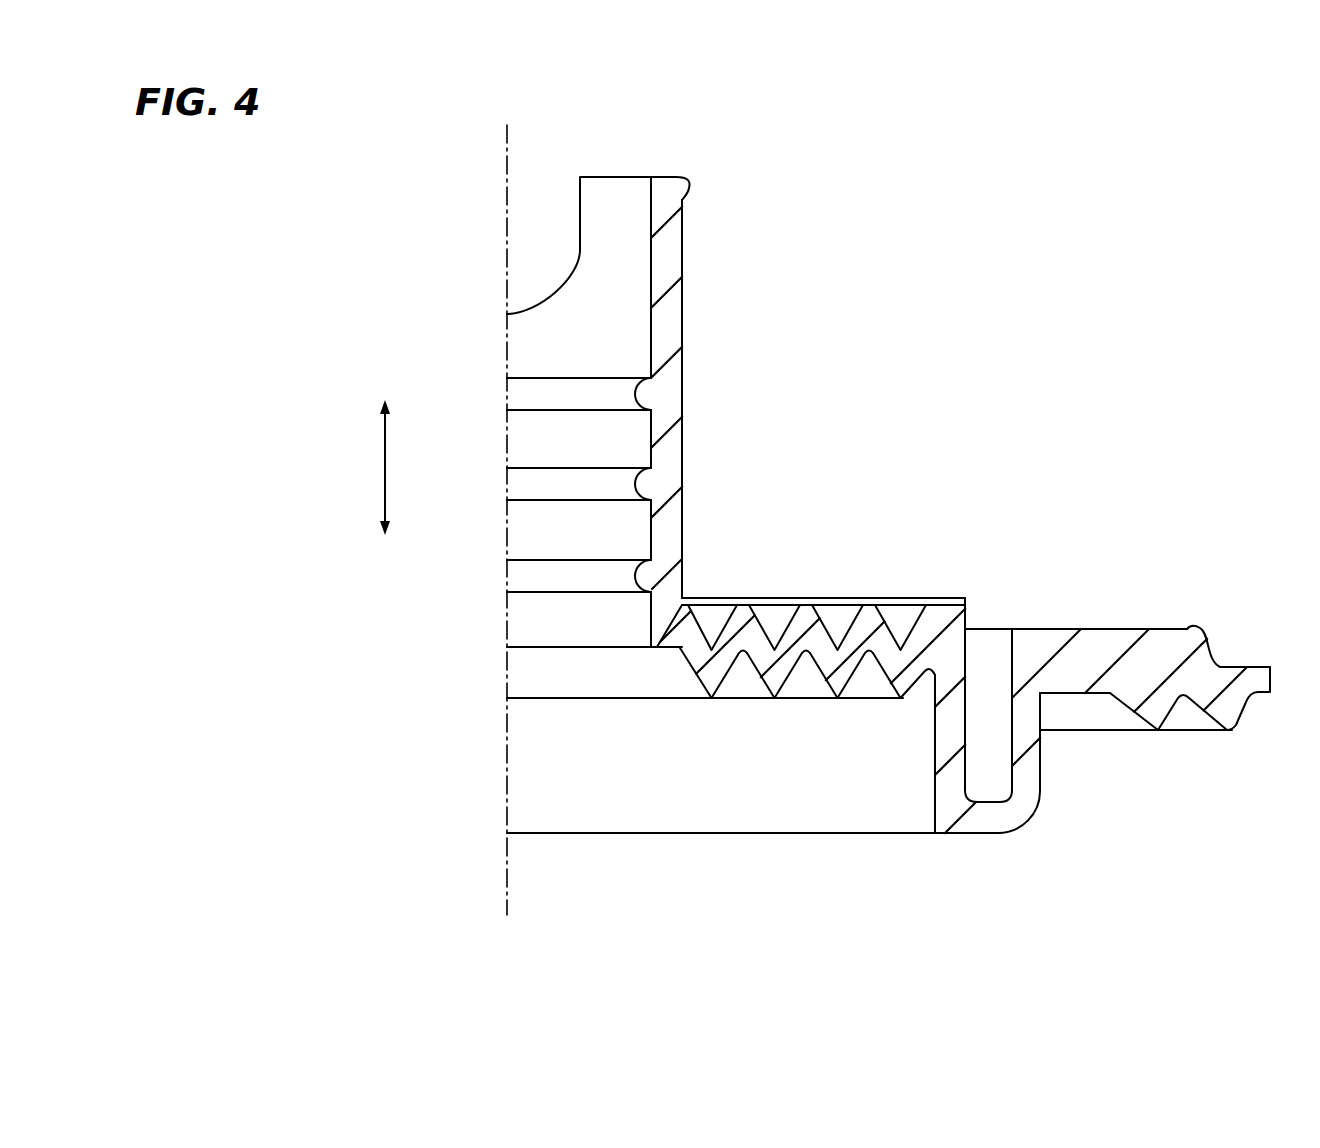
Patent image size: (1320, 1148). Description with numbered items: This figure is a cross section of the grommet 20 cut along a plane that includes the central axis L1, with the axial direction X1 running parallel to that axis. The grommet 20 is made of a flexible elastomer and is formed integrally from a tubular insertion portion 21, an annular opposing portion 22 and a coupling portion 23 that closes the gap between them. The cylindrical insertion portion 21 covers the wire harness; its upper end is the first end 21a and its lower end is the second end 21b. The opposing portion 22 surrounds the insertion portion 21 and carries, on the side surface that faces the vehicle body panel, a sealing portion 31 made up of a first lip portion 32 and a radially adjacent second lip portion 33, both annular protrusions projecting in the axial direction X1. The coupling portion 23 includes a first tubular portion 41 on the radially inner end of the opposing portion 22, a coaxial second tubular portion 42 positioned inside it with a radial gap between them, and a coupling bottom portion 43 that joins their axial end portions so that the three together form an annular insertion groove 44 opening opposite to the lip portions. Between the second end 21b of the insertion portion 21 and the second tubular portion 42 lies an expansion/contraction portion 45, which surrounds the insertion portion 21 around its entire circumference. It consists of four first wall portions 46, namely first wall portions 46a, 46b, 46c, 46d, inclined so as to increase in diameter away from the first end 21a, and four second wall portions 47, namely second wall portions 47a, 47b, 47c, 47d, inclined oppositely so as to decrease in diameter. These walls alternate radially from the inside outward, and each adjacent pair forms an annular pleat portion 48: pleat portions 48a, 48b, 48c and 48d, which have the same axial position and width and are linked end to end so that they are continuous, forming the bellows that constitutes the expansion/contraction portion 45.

The grommet 20 is at (990, 236).
The insertion portion 21 is at (672, 317).
The first end 21a is at (665, 174).
The second end 21b is at (666, 650).
The opposing portion 22 is at (1189, 628).
The coupling portion 23 is at (917, 594).
The sealing portion 31 is at (1214, 742).
The first lip portion 32 is at (1165, 716).
The second lip portion 33 is at (1242, 736).
The first tubular portion 41 is at (1040, 718).
The second tubular portion 42 is at (960, 730).
The coupling bottom portion 43 is at (986, 834).
The insertion groove 44 is at (1004, 780).
The expansion/contraction portion 45 is at (823, 558).
The first wall portions 46 is at (777, 713).
The first wall portion 46a is at (687, 665).
The first wall portion 46b is at (755, 672).
The first wall portion 46c is at (818, 672).
The first wall portion 46d is at (881, 672).
The second wall portions 47 is at (818, 785).
The second wall portion 47a is at (739, 664).
The second wall portion 47b is at (802, 664).
The second wall portion 47c is at (865, 664).
The second wall portion 47d is at (927, 668).
The pleat portions 48 is at (821, 558).
The pleat portion 48a is at (708, 630).
The pleat portion 48b is at (764, 624).
The pleat portion 48c is at (832, 612).
The pleat portion 48d is at (893, 624).
The central axis L1 is at (507, 147).
The axial direction X1 is at (380, 466).